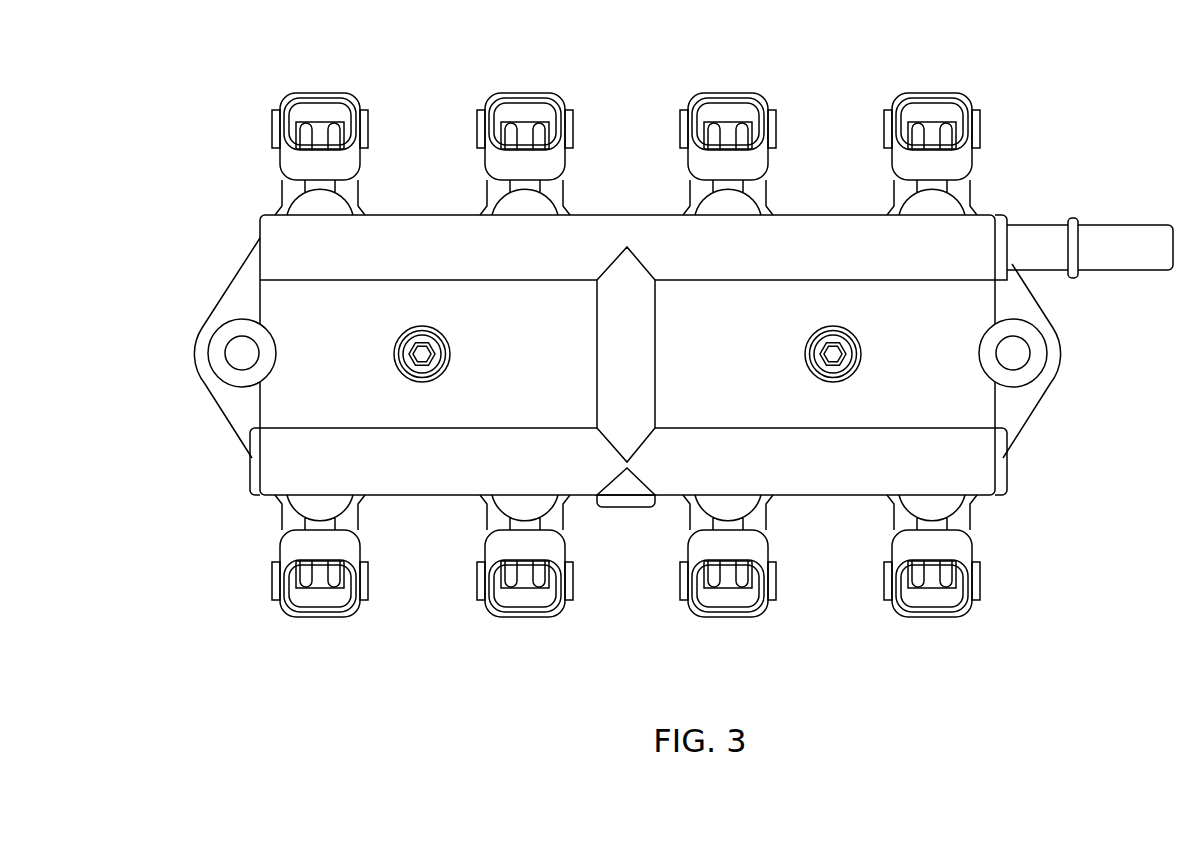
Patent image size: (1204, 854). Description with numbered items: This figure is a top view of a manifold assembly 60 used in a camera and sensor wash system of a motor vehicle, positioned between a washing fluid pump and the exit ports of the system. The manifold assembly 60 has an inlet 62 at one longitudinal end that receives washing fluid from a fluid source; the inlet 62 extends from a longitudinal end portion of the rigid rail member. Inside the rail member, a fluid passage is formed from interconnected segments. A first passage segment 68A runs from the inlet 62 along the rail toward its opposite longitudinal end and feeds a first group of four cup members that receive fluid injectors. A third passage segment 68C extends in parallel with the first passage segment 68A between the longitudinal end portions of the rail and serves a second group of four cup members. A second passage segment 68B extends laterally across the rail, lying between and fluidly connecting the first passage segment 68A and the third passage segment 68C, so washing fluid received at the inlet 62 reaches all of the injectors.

The manifold assembly 60 is at (1140, 76).
The inlet 62 is at (1104, 226).
The first passage segment 68A is at (612, 232).
The second passage segment 68B is at (612, 357).
The third passage segment 68C is at (429, 490).